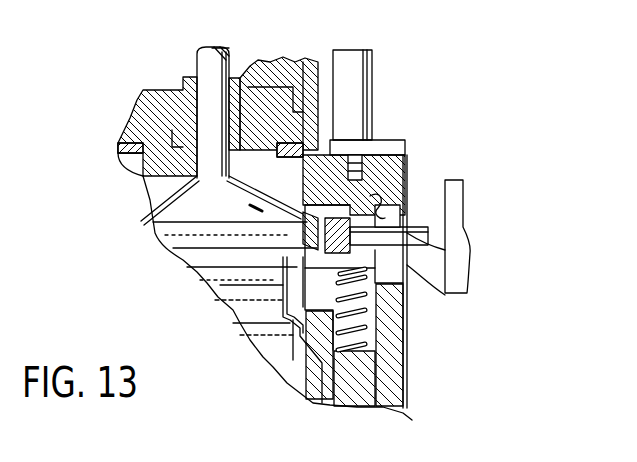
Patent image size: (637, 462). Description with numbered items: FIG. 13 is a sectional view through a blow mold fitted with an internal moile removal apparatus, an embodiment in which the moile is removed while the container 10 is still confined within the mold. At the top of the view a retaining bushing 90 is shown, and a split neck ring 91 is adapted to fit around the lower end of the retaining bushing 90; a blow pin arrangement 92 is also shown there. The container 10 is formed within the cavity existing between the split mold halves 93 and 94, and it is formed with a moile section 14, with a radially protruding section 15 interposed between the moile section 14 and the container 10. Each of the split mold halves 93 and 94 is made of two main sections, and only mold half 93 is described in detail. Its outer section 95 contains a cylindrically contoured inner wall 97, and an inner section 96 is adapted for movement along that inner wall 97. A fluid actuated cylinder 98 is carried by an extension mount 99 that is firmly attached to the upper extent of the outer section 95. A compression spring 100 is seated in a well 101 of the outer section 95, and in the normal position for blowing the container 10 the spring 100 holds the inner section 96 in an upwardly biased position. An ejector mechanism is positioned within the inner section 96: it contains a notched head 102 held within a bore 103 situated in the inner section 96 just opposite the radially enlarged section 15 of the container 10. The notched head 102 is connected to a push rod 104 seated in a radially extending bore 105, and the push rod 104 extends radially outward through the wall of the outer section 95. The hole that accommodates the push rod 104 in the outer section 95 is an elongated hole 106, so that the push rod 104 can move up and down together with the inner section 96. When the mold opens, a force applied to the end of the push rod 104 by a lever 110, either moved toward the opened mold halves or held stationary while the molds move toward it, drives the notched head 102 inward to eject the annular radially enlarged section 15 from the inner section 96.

The container 10 is at (146, 210).
The moile section 14 is at (170, 232).
The radially enlarged section 15 is at (318, 218).
The retaining bushing 90 is at (234, 82).
The split neck ring 91 is at (284, 108).
The blow pin arrangement 92 is at (197, 53).
The split mold half 93 is at (405, 352).
The split mold half 94 is at (118, 160).
The outer section 95 is at (407, 386).
The inner section 96 is at (405, 190).
The inner wall 97 is at (395, 205).
The fluid actuated cylinder 98 is at (372, 108).
The extension mount 99 is at (393, 150).
The compression spring 100 is at (407, 322).
The well 101 is at (405, 412).
The notched head 102 is at (285, 308).
The bore 103 is at (258, 206).
The push rod 104 is at (463, 222).
The radially extending bore 105 is at (470, 253).
The elongated hole 106 is at (407, 265).
The lever 110 is at (468, 288).